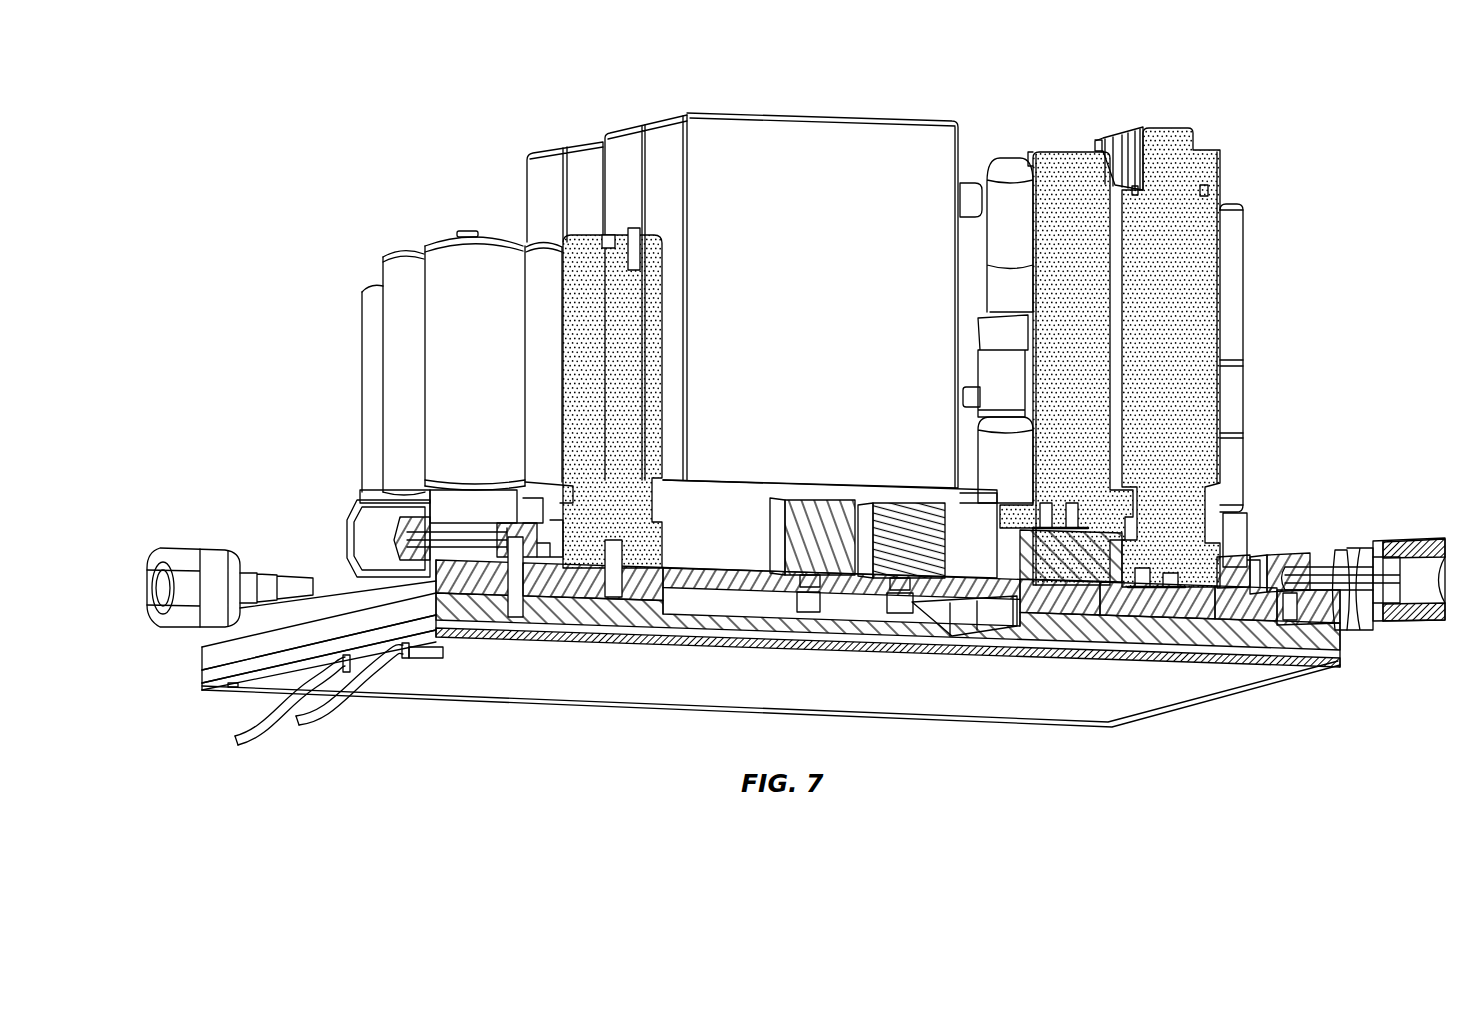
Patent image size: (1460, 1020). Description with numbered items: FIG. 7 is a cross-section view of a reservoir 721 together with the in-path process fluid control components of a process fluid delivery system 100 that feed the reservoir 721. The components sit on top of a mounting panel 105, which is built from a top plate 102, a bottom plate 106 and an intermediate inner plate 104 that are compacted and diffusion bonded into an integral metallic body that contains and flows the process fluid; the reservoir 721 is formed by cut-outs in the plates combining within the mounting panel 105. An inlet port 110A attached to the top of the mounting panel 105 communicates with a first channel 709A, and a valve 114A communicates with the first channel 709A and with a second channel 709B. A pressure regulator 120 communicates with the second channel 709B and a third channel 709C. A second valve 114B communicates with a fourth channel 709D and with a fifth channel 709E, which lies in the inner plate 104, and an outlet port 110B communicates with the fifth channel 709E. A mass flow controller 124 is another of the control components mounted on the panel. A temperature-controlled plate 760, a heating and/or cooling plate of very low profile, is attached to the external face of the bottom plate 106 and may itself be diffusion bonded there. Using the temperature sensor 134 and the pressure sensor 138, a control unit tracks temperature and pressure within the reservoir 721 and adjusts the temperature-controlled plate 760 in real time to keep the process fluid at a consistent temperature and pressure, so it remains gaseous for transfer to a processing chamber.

The process fluid delivery system 100 is at (207, 69).
The mass flow controller 124 is at (866, 116).
The pressure regulator 120 is at (1066, 150).
The valve 114A is at (1160, 127).
The valve 114B is at (465, 213).
The inlet port 110A is at (1398, 548).
The outlet port 110B is at (339, 532).
The mounting panel 105 is at (136, 640).
The top plate 102 is at (205, 645).
The inner plate 104 is at (205, 670).
The bottom plate 106 is at (205, 687).
The temperature-controlled plate 760 is at (408, 683).
The first channel 709A is at (1242, 620).
The second channel 709B is at (1105, 618).
The third channel 709C is at (1043, 613).
The fourth channel 709D is at (630, 597).
The fifth channel 709E is at (540, 613).
The reservoir 721 is at (716, 603).
The pressure sensor 138 is at (784, 566).
The temperature sensor 134 is at (872, 566).